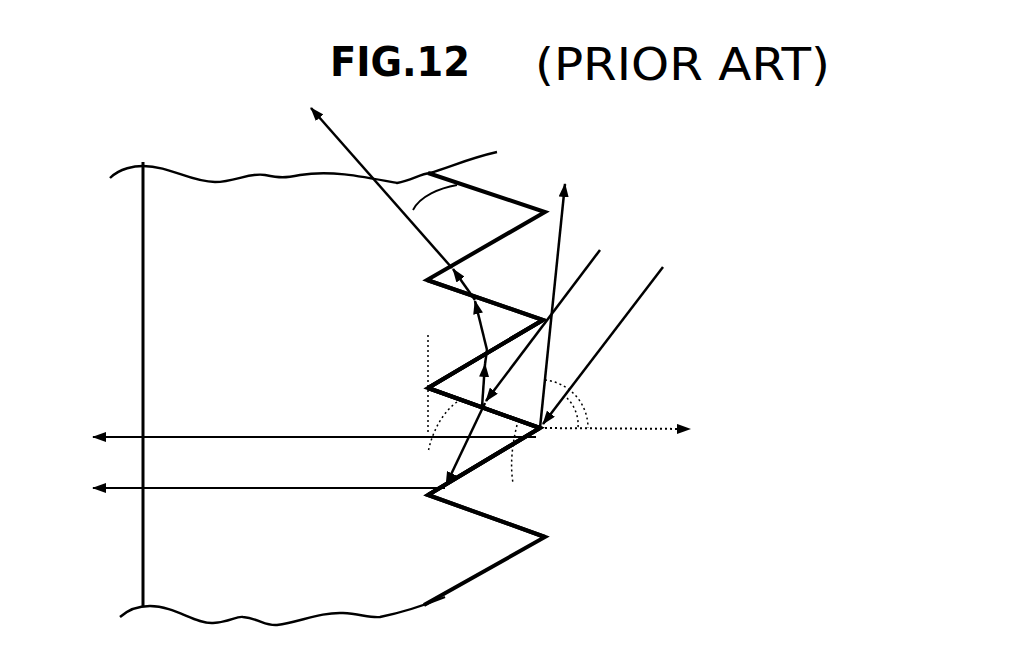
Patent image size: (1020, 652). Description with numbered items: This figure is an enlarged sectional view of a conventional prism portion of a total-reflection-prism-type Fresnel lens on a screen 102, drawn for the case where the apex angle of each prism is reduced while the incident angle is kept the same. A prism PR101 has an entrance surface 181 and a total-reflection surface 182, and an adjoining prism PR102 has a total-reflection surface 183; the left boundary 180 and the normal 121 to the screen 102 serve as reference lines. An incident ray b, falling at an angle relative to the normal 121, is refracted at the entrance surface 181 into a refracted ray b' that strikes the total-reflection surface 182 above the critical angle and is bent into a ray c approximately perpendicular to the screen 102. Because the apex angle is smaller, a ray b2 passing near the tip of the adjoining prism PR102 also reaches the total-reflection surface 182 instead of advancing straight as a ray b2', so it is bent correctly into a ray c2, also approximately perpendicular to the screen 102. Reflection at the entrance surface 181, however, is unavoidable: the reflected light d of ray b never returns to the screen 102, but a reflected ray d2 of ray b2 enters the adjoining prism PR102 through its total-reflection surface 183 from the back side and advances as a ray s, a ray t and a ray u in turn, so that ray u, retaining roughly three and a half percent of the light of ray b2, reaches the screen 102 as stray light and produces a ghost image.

The screen 102 is at (462, 176).
The light exit surface 180 is at (142, 422).
The entrance surface 181 is at (503, 422).
The total-reflection surface 182 is at (525, 443).
The total-reflection surface 183 is at (465, 360).
The normal 121 is at (645, 432).
The prism PR101 is at (482, 448).
The adjoining prism PR102 is at (467, 322).
The ray b is at (603, 331).
The ray b2 is at (544, 315).
The refracted ray b' is at (571, 458).
The straight advancing ray b2' is at (456, 470).
The reflected ray d is at (567, 207).
The reflected ray d2 is at (453, 367).
The ray s is at (483, 333).
The ray t is at (465, 285).
The ray u is at (407, 222).
The ray c is at (236, 437).
The ray c2 is at (240, 488).